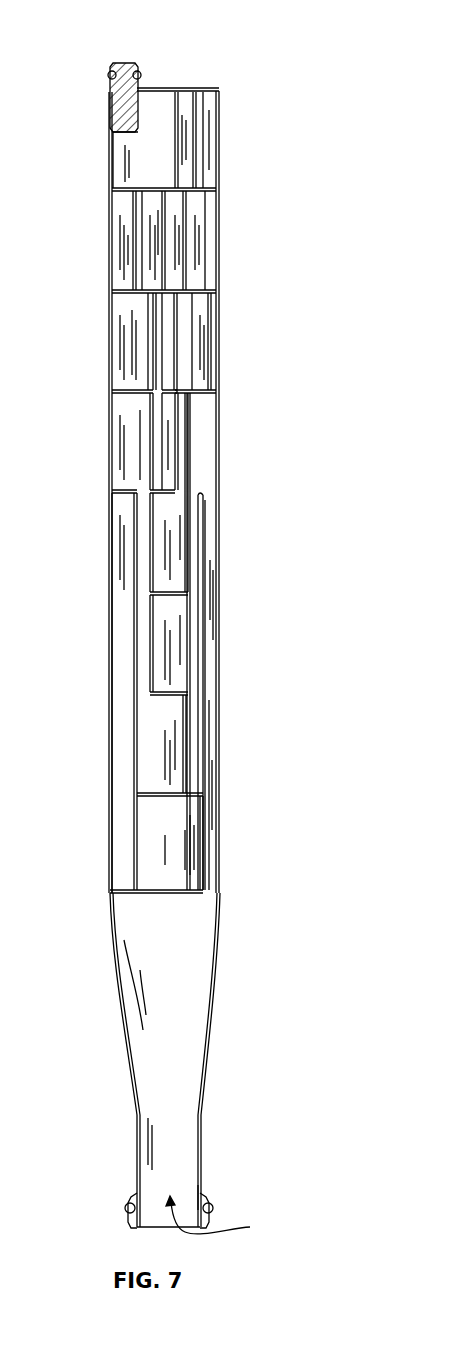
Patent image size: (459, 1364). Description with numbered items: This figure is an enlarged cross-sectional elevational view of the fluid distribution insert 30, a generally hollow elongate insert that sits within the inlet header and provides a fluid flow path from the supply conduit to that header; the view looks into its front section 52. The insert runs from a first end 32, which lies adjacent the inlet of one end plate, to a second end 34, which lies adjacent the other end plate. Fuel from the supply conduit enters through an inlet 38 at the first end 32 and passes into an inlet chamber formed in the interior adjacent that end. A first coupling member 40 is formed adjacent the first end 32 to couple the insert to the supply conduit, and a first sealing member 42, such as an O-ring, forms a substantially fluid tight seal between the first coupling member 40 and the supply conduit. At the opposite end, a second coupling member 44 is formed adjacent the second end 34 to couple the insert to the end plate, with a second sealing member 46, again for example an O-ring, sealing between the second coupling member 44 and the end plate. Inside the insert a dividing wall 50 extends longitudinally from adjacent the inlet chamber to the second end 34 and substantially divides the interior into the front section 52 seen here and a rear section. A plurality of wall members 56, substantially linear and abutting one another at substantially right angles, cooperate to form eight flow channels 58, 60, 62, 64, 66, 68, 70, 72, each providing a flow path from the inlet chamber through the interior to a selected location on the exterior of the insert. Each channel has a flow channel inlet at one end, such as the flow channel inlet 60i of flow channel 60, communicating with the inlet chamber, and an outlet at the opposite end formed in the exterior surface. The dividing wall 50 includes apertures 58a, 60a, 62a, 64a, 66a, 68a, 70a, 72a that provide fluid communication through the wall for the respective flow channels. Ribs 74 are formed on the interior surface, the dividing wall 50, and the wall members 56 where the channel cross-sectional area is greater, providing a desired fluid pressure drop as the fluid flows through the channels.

The fluid distribution insert 30 is at (232, 64).
The first end 32 is at (202, 1148).
The second end 34 is at (194, 87).
The inlet 38 is at (221, 1215).
The first coupling member 40 is at (133, 1194).
The first sealing member 42 is at (125, 1208).
The second coupling member 44 is at (127, 62).
The second sealing member 46 is at (108, 77).
The dividing wall 50 is at (130, 876).
The front section 52 is at (108, 155).
The wall members 56 is at (136, 668).
The flow channel 58 is at (130, 752).
The aperture 58a is at (122, 545).
The flow channel 60 is at (205, 540).
The aperture 60a is at (208, 793).
The flow channel inlet 60i is at (208, 694).
The flow channel 62 is at (145, 508).
The aperture 62a is at (120, 440).
The flow channel 64 is at (182, 424).
The aperture 64a is at (205, 360).
The flow channel 66 is at (138, 368).
The aperture 66a is at (123, 312).
The flow channel 68 is at (190, 222).
The aperture 68a is at (208, 262).
The flow channel 70 is at (157, 270).
The aperture 70a is at (121, 205).
The flow channel 72 is at (187, 135).
The aperture 72a is at (208, 166).
The ribs 74 is at (132, 830).